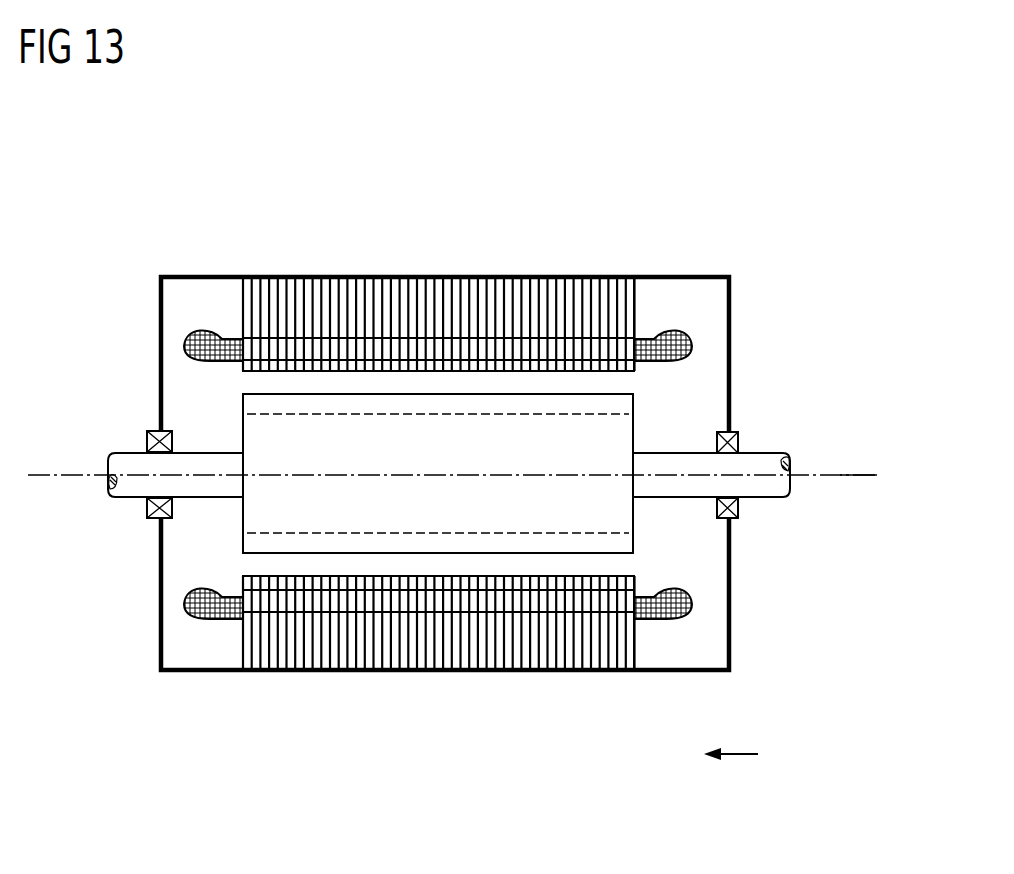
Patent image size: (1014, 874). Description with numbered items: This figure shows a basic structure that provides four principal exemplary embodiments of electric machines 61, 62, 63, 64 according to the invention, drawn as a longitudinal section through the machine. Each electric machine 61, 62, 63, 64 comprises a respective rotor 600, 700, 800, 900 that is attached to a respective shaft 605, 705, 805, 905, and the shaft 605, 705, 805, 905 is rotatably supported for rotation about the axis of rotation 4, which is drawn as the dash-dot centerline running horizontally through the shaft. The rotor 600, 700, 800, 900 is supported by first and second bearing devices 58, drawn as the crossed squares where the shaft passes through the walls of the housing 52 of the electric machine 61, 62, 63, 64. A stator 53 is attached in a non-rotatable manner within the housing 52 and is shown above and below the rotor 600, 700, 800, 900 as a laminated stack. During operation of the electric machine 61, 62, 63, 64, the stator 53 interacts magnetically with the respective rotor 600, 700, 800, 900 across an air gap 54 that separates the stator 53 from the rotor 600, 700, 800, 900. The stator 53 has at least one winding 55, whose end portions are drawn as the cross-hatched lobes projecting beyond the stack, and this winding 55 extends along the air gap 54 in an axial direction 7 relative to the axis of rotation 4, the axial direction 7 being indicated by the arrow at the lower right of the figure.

The electric machine 61 is at (446, 455).
The electric machine 62 is at (446, 455).
The electric machine 63 is at (446, 455).
The electric machine 64 is at (395, 160).
The housing 52 is at (293, 275).
The stator 53 is at (213, 292).
The air gap 54 is at (252, 383).
The winding 55 is at (668, 330).
The bearing device 58 is at (146, 440).
The axis of rotation 4 is at (871, 476).
The axial direction 7 is at (739, 758).
The rotor 600 is at (324, 565).
The rotor 700 is at (324, 565).
The rotor 800 is at (324, 565).
The rotor 900 is at (213, 538).
The shaft 605 is at (407, 538).
The shaft 705 is at (407, 538).
The shaft 805 is at (407, 538).
The shaft 905 is at (137, 483).